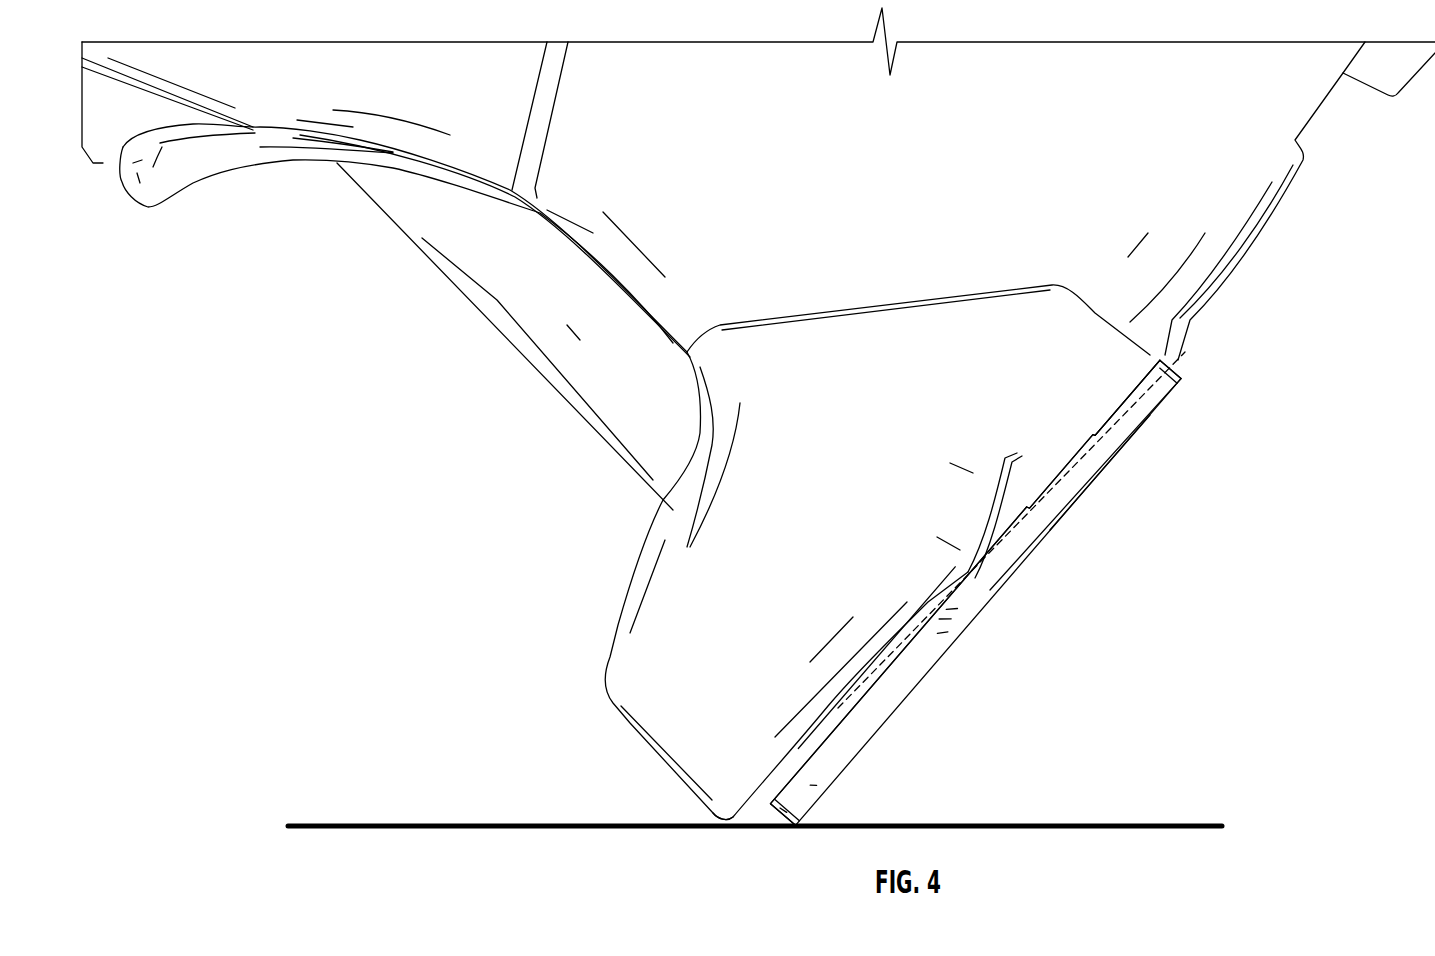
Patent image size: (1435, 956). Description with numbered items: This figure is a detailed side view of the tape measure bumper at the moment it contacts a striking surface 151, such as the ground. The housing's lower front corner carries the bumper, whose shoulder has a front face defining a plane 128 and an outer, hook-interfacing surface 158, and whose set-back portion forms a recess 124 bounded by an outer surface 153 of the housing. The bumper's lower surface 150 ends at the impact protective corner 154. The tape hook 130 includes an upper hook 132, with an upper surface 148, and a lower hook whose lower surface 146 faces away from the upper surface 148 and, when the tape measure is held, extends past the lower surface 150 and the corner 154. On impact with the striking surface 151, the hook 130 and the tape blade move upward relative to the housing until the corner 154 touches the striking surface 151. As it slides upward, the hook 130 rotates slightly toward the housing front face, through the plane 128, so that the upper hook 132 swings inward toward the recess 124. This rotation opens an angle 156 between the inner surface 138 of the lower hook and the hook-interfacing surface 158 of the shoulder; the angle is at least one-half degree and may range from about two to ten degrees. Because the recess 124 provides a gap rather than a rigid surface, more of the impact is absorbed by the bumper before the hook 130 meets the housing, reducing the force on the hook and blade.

The recess 124 is at (1044, 476).
The plane 128 is at (1116, 449).
The tape hook 130 is at (995, 585).
The upper hook 132 is at (1170, 398).
The inner surface of lower hook 138 is at (842, 728).
The lower surface of lower hook 146 is at (777, 812).
The upper surface of upper hook 148 is at (1188, 373).
The lower surface 150 is at (627, 742).
The striking surface 151 is at (1038, 830).
The outer surface 153 is at (1107, 400).
The corner 154 is at (731, 805).
The angle 156 is at (914, 647).
The hook-interfacing surface 158 is at (873, 663).